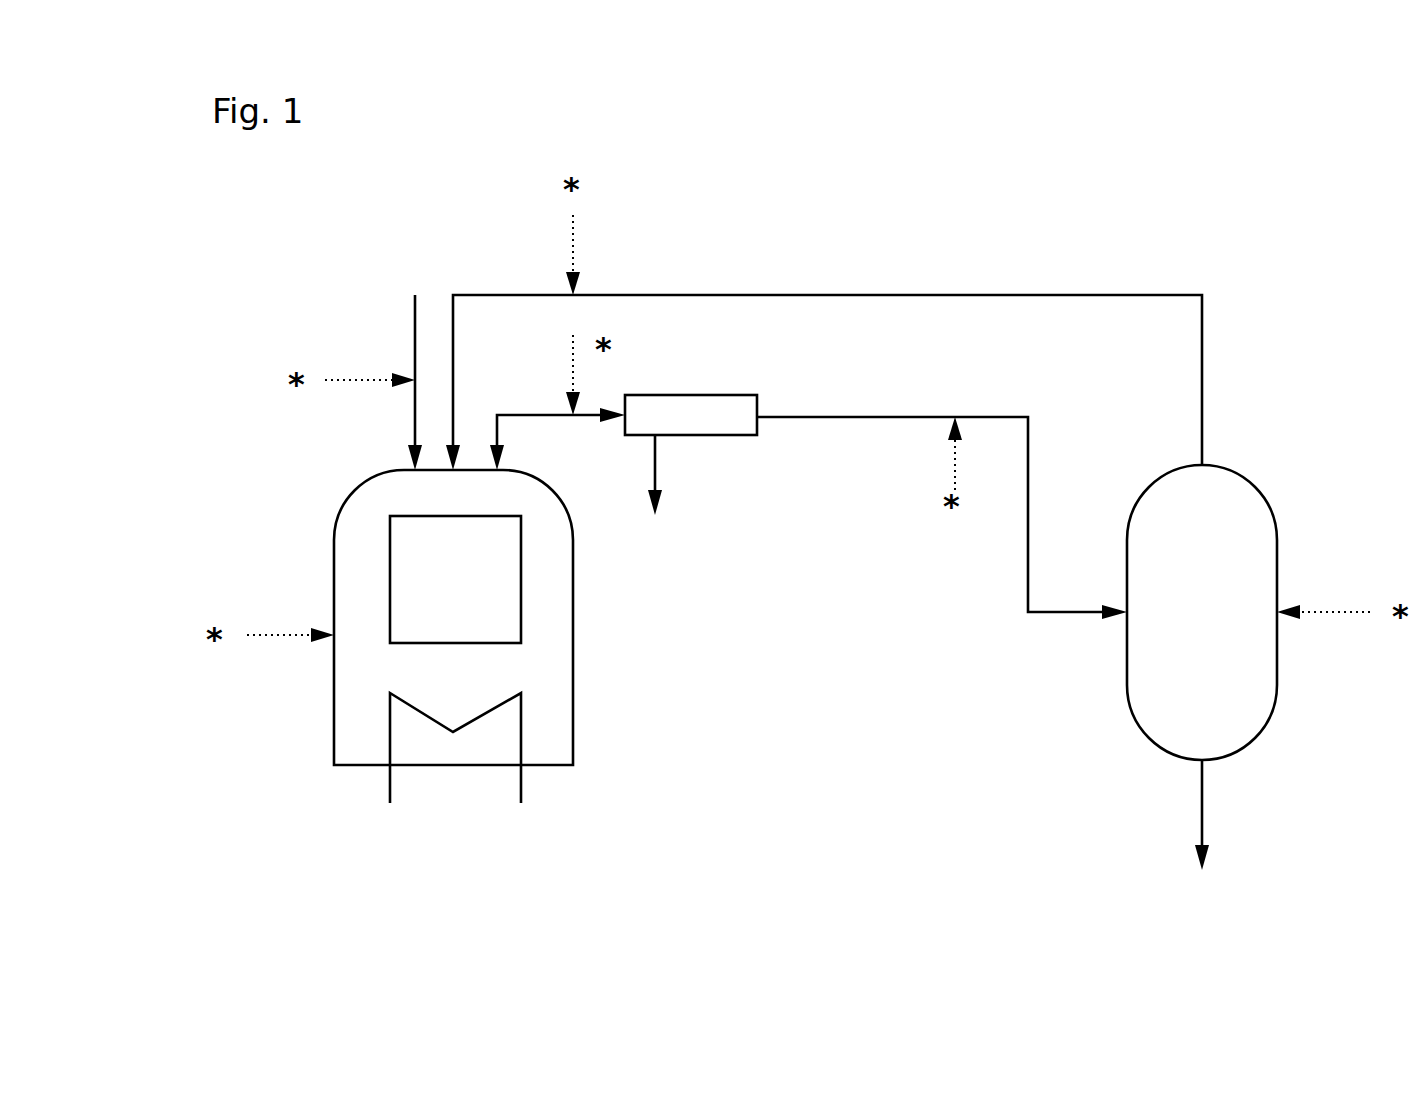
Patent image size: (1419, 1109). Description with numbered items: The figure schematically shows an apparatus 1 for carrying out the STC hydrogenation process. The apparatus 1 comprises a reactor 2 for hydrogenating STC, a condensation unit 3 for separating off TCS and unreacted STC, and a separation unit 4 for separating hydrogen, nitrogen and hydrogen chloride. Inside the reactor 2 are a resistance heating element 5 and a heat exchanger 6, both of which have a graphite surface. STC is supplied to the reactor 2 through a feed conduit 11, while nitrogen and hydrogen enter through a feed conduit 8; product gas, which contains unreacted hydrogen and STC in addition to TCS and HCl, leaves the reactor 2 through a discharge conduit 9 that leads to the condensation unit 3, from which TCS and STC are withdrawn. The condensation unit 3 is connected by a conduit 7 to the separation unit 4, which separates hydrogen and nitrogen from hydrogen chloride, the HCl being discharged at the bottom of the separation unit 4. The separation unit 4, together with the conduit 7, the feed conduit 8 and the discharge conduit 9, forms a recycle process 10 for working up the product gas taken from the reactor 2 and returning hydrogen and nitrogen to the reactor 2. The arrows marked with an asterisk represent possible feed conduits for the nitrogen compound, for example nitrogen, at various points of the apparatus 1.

The apparatus 1 is at (200, 280).
The reactor 2 is at (573, 692).
The condensation unit 3 is at (700, 435).
The separation unit 4 is at (1237, 755).
The resistance heating element 5 is at (391, 783).
The heat exchanger 6 is at (521, 585).
The conduit 7 is at (1028, 533).
The feed conduit 8 is at (678, 295).
The discharge conduit 9 is at (522, 416).
The recycle process 10 is at (1070, 338).
The feed conduit 11 is at (414, 420).